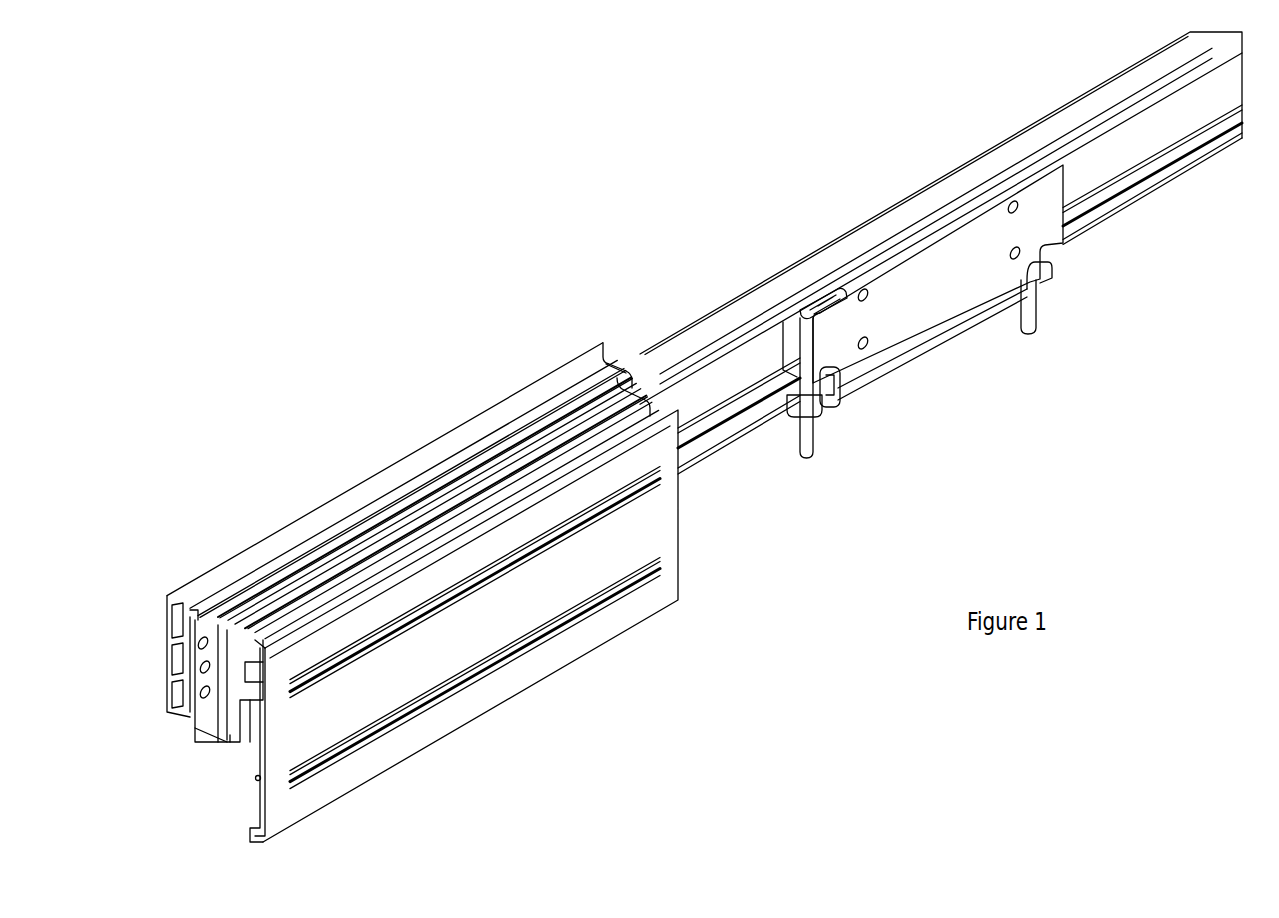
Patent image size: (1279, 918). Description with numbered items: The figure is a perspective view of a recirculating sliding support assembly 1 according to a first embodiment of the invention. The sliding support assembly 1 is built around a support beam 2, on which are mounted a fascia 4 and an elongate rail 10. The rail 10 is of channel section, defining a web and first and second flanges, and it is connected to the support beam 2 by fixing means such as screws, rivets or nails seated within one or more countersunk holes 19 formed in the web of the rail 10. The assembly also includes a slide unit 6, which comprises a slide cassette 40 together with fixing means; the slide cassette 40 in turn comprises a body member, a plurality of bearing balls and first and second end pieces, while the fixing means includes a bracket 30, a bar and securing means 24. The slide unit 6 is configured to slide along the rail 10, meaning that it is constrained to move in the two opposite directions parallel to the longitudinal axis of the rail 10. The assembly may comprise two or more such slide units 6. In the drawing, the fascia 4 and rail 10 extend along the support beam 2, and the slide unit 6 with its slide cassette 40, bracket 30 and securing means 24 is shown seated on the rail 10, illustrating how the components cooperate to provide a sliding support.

The sliding support assembly 1 is at (1022, 470).
The support beam 2 is at (277, 548).
The fascia 4 is at (394, 742).
The slide unit 6 is at (990, 337).
The elongate rail 10 is at (697, 340).
The countersunk holes 19 is at (203, 697).
The securing means 24 is at (805, 458).
The bracket 30 is at (885, 333).
The slide cassette 40 is at (817, 308).